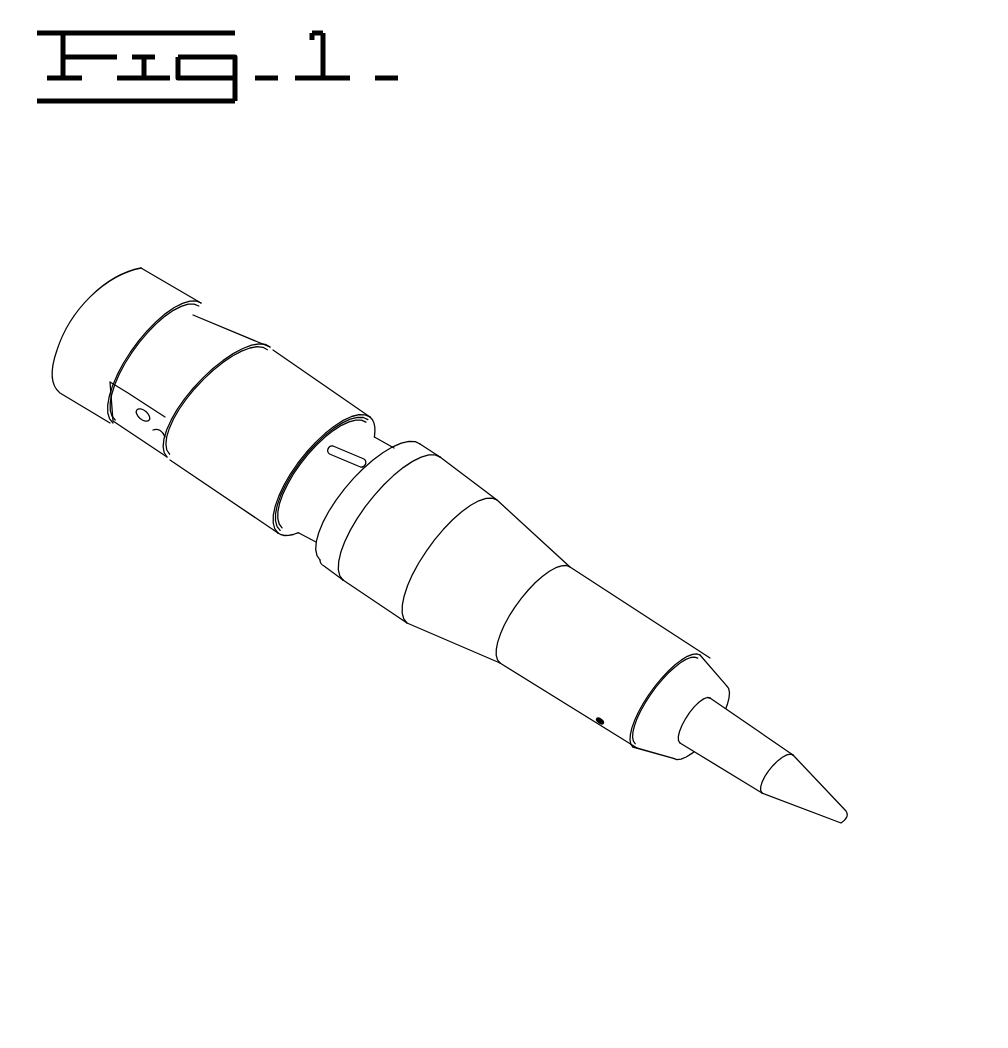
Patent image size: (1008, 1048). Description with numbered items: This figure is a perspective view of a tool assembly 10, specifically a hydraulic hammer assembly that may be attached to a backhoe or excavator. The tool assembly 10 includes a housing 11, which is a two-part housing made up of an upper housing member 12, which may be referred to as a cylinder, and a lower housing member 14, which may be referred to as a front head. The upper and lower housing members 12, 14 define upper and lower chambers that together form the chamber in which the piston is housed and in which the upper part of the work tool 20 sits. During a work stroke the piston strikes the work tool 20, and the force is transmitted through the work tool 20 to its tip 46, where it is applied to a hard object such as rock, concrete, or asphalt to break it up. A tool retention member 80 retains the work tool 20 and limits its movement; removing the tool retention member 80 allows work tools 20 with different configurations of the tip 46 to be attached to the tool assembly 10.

The tool assembly 10 is at (596, 359).
The housing 11 is at (455, 460).
The upper housing member 12 is at (220, 328).
The lower housing member 14 is at (545, 538).
The work tool 20 is at (763, 733).
The tip 46 is at (830, 791).
The tool retention member 80 is at (722, 672).